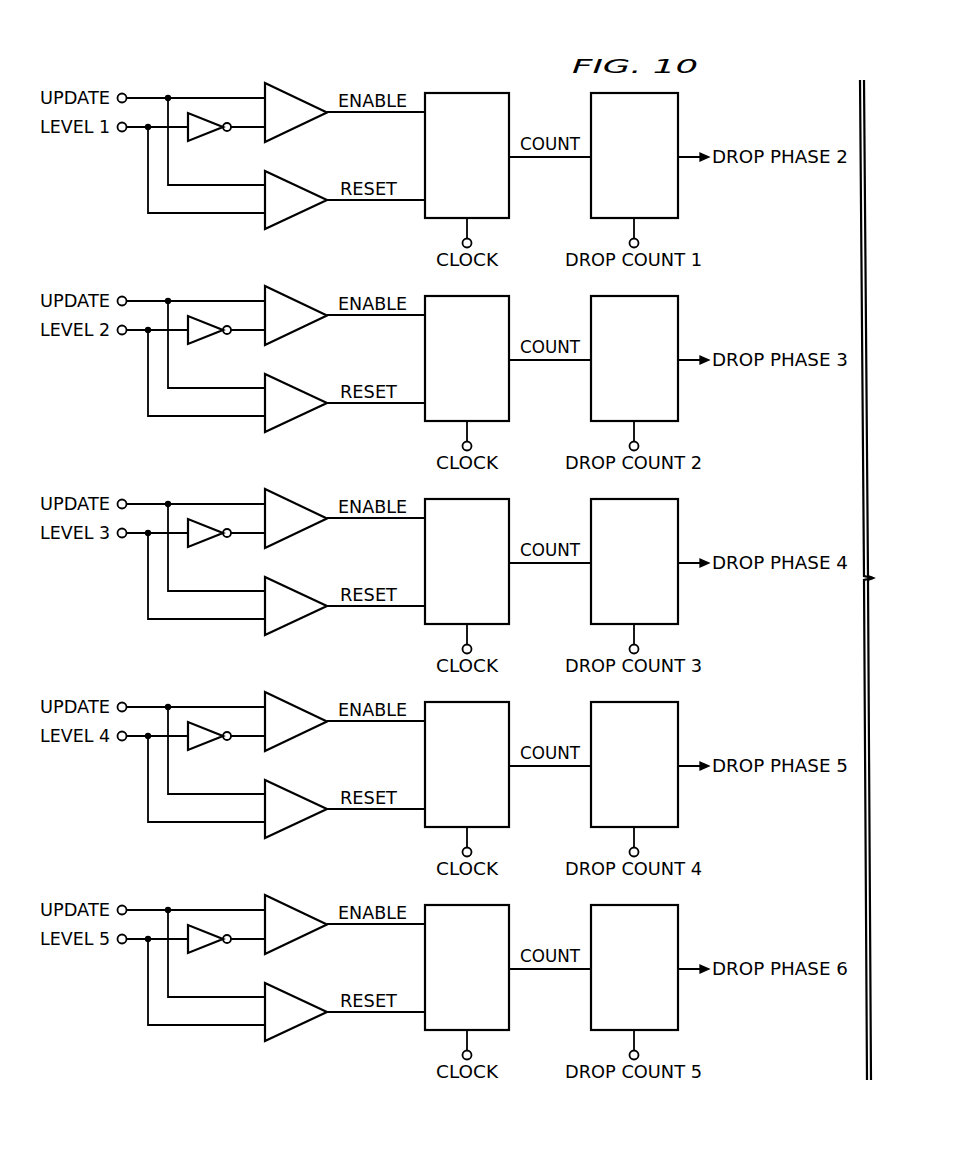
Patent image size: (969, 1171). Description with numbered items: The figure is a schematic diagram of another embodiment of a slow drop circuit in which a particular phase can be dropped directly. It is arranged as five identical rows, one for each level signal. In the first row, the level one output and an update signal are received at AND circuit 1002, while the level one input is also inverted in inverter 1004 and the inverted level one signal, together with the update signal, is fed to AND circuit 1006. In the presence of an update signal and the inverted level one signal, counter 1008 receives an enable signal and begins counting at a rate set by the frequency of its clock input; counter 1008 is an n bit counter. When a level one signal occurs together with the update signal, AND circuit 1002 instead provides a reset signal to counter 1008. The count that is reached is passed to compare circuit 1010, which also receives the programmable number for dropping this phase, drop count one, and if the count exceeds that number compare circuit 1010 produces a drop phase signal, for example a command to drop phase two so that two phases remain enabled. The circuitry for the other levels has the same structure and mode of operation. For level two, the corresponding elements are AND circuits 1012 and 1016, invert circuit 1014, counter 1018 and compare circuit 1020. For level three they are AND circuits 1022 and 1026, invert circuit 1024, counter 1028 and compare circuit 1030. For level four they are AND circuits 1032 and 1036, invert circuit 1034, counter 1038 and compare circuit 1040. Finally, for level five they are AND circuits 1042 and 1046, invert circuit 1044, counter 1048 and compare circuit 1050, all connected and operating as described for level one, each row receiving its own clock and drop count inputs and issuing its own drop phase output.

The AND circuit 1002 is at (323, 167).
The inverter 1004 is at (210, 134).
The AND circuit 1006 is at (323, 79).
The counter 1008 is at (447, 168).
The compare circuit 1010 is at (614, 168).
The AND circuit 1012 is at (303, 391).
The invert circuit 1014 is at (220, 347).
The AND circuit 1016 is at (303, 303).
The counter 1018 is at (467, 358).
The compare circuit 1020 is at (634, 358).
The AND circuit 1022 is at (303, 619).
The invert circuit 1024 is at (220, 550).
The AND circuit 1026 is at (303, 506).
The counter 1028 is at (467, 561).
The compare circuit 1030 is at (634, 561).
The AND circuit 1032 is at (305, 821).
The invert circuit 1034 is at (220, 753).
The AND circuit 1036 is at (305, 735).
The counter 1038 is at (467, 764).
The compare circuit 1040 is at (634, 764).
The AND circuit 1042 is at (305, 1024).
The invert circuit 1044 is at (220, 956).
The AND circuit 1046 is at (305, 938).
The counter 1048 is at (467, 967).
The compare circuit 1050 is at (634, 967).